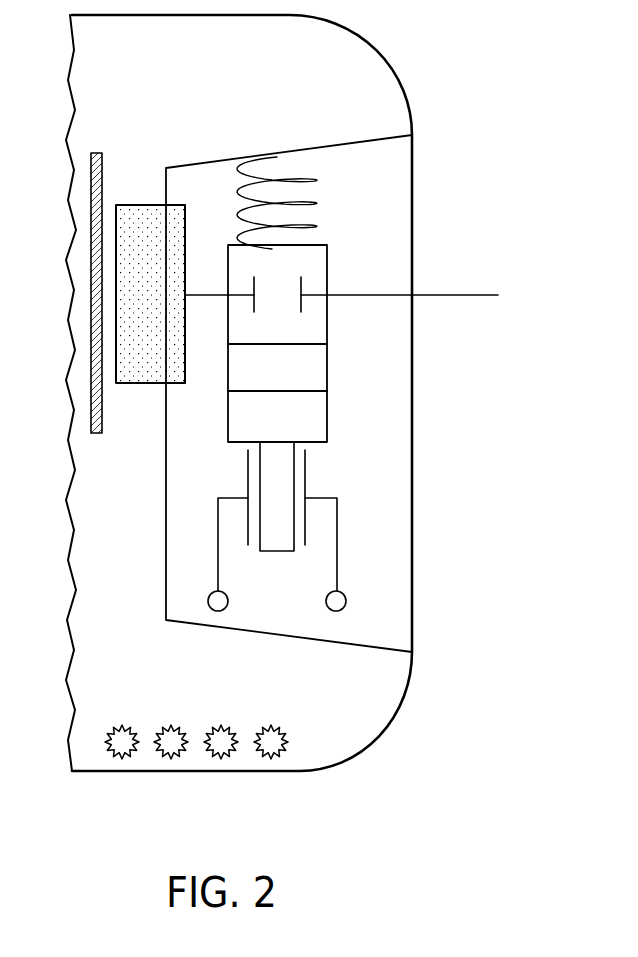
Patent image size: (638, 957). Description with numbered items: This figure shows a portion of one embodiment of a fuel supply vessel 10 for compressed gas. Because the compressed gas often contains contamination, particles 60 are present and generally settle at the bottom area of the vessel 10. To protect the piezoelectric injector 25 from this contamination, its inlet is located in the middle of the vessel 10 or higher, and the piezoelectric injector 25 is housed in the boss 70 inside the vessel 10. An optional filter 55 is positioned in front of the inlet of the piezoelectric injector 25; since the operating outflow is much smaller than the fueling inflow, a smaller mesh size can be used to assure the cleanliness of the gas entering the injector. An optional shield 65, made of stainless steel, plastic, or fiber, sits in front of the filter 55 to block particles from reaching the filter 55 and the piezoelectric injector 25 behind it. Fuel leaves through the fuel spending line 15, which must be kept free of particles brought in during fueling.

The vessel 10 is at (412, 80).
The fuel spending line 15 is at (482, 295).
The piezoelectric injector 25 is at (327, 245).
The filter 55 is at (140, 205).
The particles 60 is at (122, 759).
The shield 65 is at (95, 153).
The boss 70 is at (405, 237).